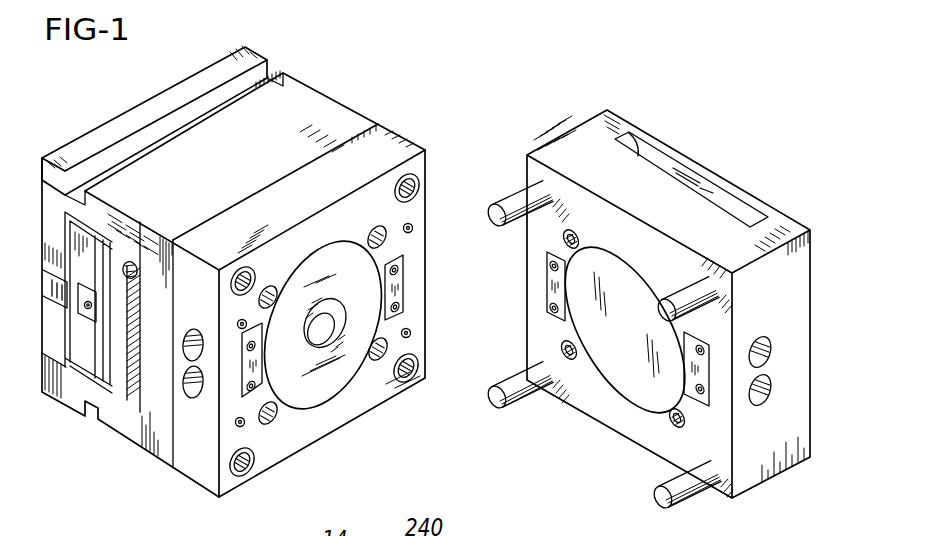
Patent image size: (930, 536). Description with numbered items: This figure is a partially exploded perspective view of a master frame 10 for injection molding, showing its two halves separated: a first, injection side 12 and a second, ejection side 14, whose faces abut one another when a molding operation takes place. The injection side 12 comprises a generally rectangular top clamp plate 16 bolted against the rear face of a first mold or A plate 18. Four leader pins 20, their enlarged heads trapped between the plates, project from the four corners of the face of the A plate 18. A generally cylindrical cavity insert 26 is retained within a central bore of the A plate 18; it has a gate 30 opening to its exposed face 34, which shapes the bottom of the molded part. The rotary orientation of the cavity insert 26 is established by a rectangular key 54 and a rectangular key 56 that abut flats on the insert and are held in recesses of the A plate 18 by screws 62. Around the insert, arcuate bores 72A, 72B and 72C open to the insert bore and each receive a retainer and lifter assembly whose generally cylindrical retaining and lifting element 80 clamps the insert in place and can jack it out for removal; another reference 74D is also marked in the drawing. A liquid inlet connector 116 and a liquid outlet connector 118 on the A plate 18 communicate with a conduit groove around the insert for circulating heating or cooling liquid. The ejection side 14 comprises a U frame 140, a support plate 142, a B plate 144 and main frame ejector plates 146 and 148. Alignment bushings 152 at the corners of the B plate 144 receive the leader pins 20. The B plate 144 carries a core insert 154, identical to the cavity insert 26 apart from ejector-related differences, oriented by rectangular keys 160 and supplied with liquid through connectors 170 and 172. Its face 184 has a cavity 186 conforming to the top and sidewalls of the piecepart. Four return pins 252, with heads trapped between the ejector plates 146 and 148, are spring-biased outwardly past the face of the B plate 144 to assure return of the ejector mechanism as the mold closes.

The master frame 10 is at (486, 90).
The injection side 12 is at (688, 148).
The ejection side 14 is at (326, 72).
The top clamp plate 16 is at (595, 120).
The A plate 18 is at (552, 142).
The leader pins 20 is at (513, 192).
The cavity insert 26 is at (610, 398).
The gate 30 is at (622, 333).
The exposed face 34 is at (580, 387).
The rectangular key 54 is at (553, 308).
The rectangular key 56 is at (710, 392).
The screws 62 is at (552, 282).
The arcuate bore 72A is at (556, 254).
The arcuate bore 72B is at (671, 296).
The arcuate bore 72C is at (650, 428).
The locking lug 74D is at (563, 346).
The retaining and lifting element 80 is at (565, 235).
The liquid inlet connector 116 is at (770, 352).
The liquid outlet connector 118 is at (770, 388).
The U frame 140 is at (222, 63).
The support plate 142 is at (355, 113).
The B plate 144 is at (395, 148).
The main frame ejector plate 146 is at (83, 362).
The main frame ejector plate 148 is at (100, 373).
The alignment bushings 152 is at (418, 175).
The core insert 154 is at (352, 386).
The rectangular keys 160 is at (404, 312).
The connector 170 is at (192, 327).
The connector 172 is at (190, 395).
The face 184 is at (336, 384).
The cavity 186 is at (333, 307).
The return pins 252 is at (413, 227).